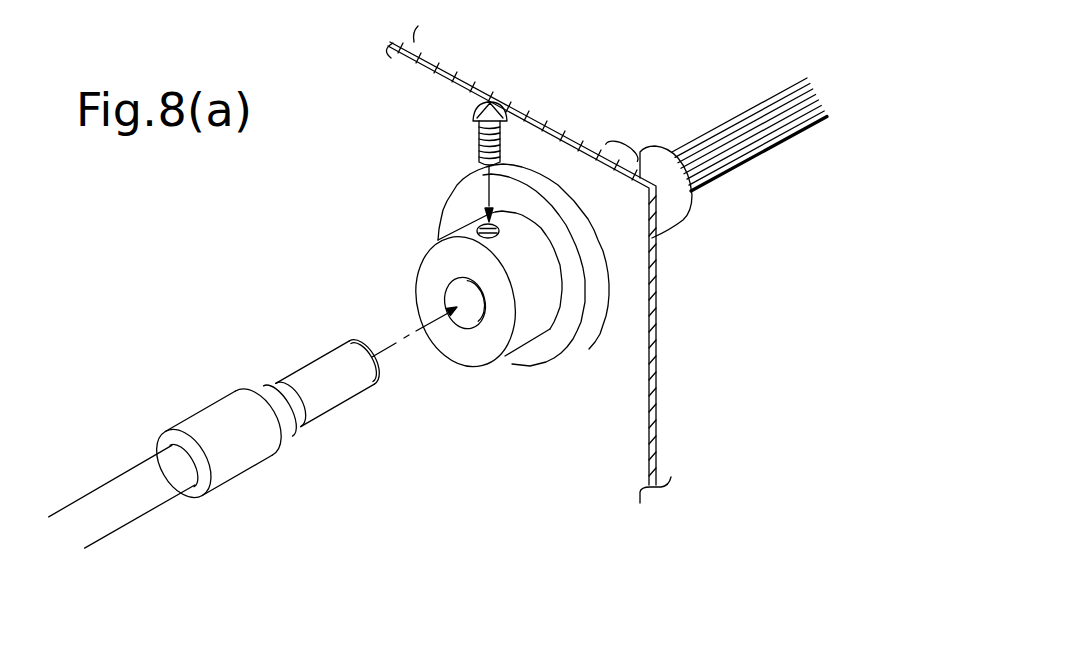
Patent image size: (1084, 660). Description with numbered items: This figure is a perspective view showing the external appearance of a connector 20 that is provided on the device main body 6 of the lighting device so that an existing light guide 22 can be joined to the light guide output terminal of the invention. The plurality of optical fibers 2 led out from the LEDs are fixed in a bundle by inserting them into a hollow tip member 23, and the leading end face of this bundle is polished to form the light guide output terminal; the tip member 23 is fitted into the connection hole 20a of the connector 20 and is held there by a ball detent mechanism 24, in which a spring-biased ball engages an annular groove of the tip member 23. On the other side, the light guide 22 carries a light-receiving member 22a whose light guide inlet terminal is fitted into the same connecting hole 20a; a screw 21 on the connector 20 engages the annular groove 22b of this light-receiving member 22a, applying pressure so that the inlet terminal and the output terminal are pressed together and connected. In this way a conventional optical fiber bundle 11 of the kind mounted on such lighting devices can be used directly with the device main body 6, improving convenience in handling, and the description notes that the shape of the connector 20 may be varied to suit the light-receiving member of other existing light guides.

The optical fibers 2 is at (772, 128).
The device main body 6 is at (636, 343).
The optical fiber bundle 11 is at (113, 482).
The connector 20 is at (592, 343).
The connection hole 20a is at (471, 322).
The screw 21 is at (474, 108).
The light guide 22 is at (231, 481).
The light-receiving member 22a is at (305, 375).
The annular groove 22b is at (294, 424).
The tip member 23 is at (676, 213).
The ball detent mechanism 24 is at (620, 143).